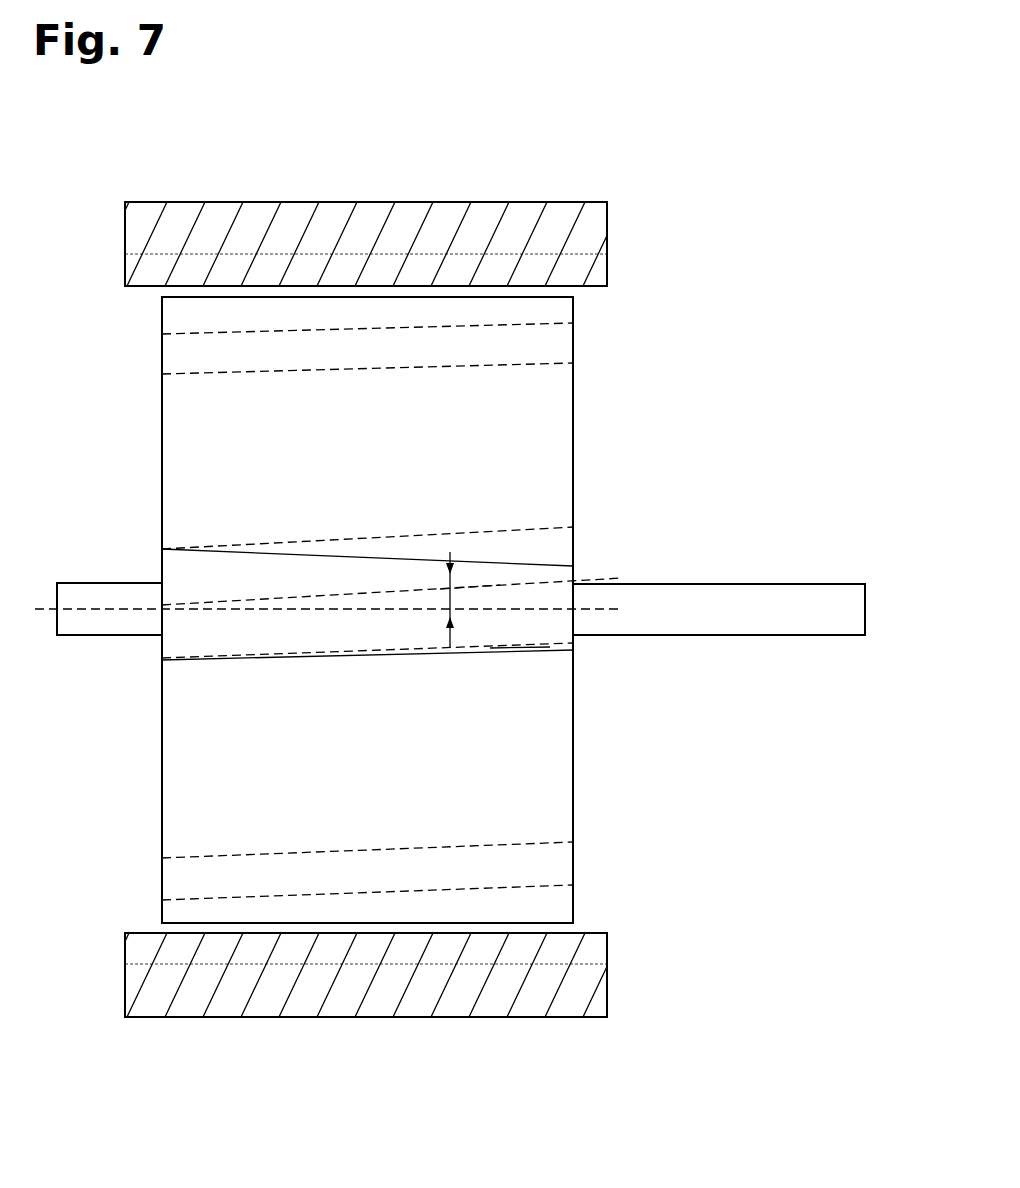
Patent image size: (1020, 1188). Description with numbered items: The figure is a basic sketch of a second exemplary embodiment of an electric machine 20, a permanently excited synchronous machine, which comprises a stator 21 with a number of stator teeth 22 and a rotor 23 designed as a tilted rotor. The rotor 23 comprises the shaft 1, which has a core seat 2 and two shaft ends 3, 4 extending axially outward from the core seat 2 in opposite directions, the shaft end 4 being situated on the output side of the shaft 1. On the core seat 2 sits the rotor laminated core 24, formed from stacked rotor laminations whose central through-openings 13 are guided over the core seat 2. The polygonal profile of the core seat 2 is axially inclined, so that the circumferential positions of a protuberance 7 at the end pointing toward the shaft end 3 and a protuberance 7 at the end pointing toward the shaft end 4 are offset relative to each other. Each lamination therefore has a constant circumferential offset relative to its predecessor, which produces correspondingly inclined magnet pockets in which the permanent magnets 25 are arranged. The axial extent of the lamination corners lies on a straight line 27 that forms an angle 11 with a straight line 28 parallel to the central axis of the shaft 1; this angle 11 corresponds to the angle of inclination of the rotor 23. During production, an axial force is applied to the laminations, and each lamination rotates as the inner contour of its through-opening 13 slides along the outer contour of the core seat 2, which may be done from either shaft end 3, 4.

The shaft 1 is at (730, 583).
The core seat 2 is at (450, 648).
The shaft end 3 is at (72, 636).
The shaft end 4 is at (866, 608).
The protuberance 7 is at (379, 618).
The angle 11 is at (457, 600).
The central through-opening 13 is at (357, 525).
The electric machine 20 is at (772, 134).
The stator 21 is at (450, 202).
The stator teeth 22 is at (607, 268).
The rotor 23 is at (86, 399).
The rotor laminated core 24 is at (573, 447).
The permanent magnets 25 is at (212, 333).
The straight line 27 is at (298, 595).
The straight line 28 is at (518, 612).